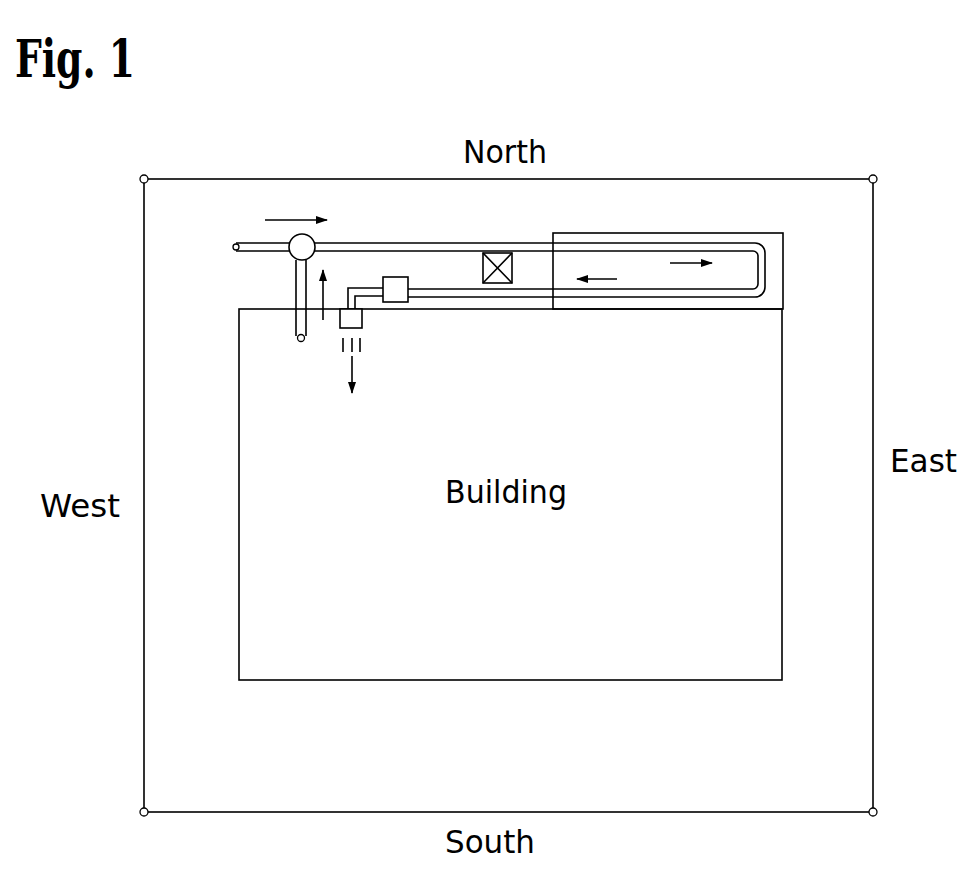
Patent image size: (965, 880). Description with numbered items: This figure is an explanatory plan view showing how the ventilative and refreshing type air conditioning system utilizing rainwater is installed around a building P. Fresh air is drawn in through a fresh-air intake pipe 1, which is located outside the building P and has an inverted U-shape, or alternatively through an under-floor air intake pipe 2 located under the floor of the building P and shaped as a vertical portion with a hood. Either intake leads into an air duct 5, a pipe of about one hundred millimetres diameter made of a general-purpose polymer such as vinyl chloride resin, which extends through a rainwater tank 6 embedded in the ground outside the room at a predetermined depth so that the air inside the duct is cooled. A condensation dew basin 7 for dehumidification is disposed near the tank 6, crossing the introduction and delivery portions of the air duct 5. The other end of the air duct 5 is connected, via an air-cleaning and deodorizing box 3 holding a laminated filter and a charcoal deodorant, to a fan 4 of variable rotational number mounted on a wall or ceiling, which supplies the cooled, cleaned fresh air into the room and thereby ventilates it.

The fresh-air intake pipe 1 is at (240, 243).
The under-floor air intake pipe 2 is at (301, 342).
The air-cleaning and deodorizing box 3 is at (400, 302).
The fan 4 is at (362, 320).
The air duct 5 is at (593, 243).
The rainwater tank 6 is at (707, 233).
The condensation dew basin 7 is at (500, 283).
The building P is at (681, 653).